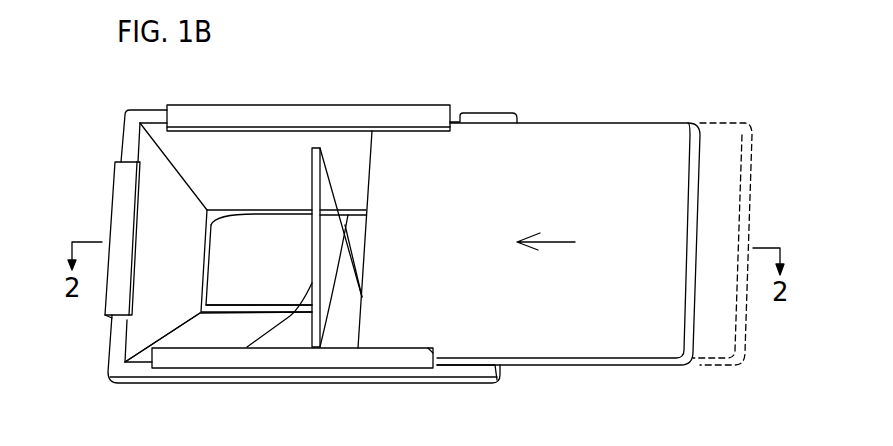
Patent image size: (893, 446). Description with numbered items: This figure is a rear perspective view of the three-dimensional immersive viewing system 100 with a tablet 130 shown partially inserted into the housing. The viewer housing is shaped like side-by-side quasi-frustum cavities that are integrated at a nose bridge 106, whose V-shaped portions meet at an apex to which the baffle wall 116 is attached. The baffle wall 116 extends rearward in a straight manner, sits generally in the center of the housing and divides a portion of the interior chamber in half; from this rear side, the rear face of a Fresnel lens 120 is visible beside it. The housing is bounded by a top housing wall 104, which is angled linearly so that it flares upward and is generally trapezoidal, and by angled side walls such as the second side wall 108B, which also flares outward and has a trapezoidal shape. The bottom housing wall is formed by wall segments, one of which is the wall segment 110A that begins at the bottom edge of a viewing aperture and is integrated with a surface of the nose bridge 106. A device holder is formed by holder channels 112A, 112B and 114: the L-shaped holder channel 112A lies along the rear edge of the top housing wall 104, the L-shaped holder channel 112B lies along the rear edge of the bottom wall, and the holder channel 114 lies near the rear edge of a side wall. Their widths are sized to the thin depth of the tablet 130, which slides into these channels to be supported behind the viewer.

The three-dimensional immersive viewing system 100 is at (358, 88).
The top housing wall 104 is at (271, 172).
The nose bridge 106 is at (292, 337).
The second side wall 108B is at (185, 262).
The wall segment 110A is at (207, 330).
The holder channel 112A is at (247, 117).
The holder channel 112B is at (368, 362).
The holder channel 114 is at (123, 208).
The baffle wall 116 is at (328, 198).
The Fresnel lens 120 is at (227, 312).
The tablet 130 is at (570, 202).